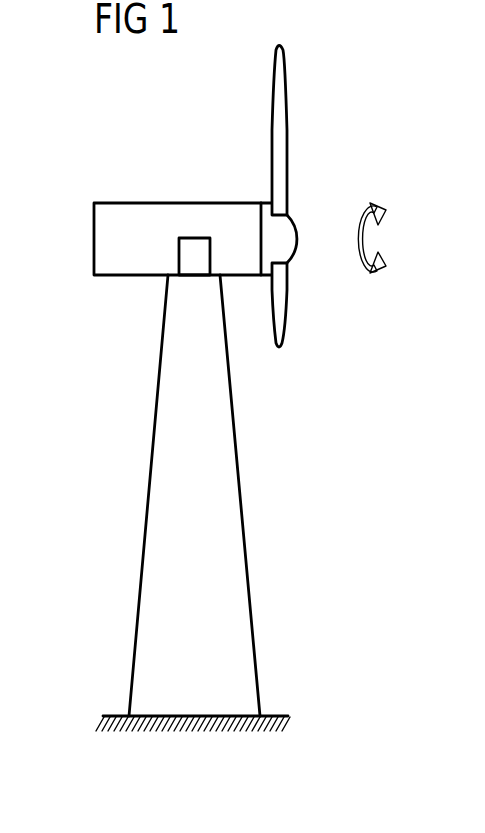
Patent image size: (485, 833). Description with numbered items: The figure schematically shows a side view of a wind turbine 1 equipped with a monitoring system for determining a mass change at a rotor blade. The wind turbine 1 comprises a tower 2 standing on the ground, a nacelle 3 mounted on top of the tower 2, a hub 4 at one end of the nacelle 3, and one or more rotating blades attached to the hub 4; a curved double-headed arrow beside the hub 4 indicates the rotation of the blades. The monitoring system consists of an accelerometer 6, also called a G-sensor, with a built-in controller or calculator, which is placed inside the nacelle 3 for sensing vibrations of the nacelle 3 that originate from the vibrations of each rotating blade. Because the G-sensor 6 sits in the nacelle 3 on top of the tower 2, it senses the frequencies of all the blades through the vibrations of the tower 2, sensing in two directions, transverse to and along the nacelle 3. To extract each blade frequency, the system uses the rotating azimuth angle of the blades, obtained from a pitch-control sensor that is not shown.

The wind turbine 1 is at (194, 124).
The tower 2 is at (232, 453).
The nacelle 3 is at (178, 213).
The hub 4 is at (287, 240).
The accelerometer 6 is at (190, 257).